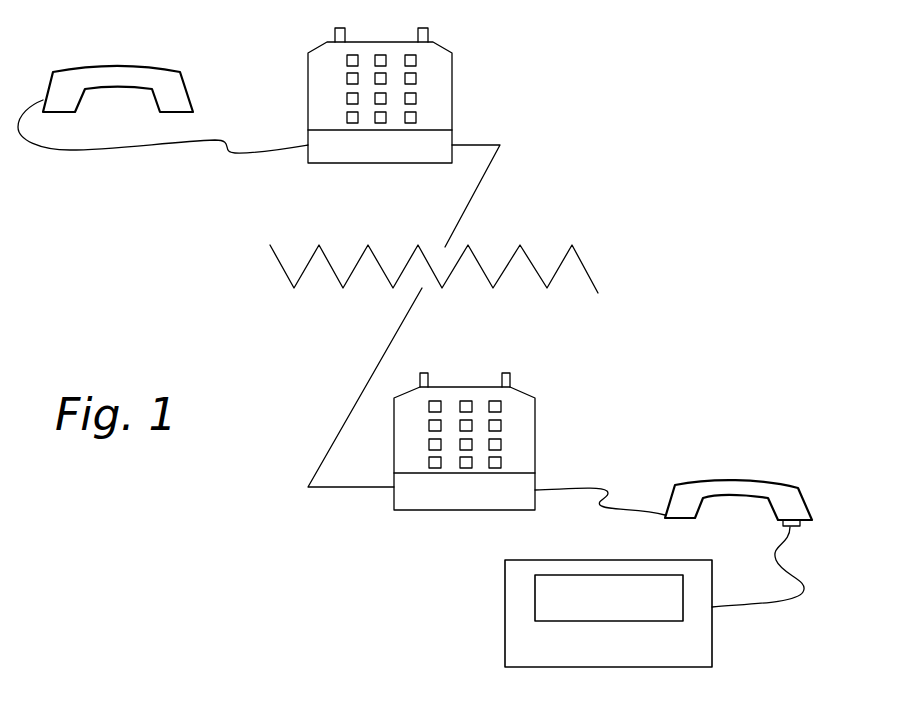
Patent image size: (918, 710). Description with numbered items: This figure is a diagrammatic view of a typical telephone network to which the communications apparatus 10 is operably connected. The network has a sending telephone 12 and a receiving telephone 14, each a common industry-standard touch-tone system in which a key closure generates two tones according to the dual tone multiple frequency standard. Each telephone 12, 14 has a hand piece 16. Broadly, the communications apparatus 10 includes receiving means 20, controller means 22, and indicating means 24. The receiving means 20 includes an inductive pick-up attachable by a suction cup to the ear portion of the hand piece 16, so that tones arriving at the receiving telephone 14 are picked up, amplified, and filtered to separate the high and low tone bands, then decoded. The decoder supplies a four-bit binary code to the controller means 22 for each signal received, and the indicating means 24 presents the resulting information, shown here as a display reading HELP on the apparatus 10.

The communications apparatus 10 is at (592, 601).
The sending telephone 12 is at (458, 73).
The receiving telephone 14 is at (545, 412).
The hand piece 16 is at (736, 481).
The receiving means 20 is at (802, 575).
The controller means 22 is at (695, 652).
The indicating means 24 is at (652, 590).